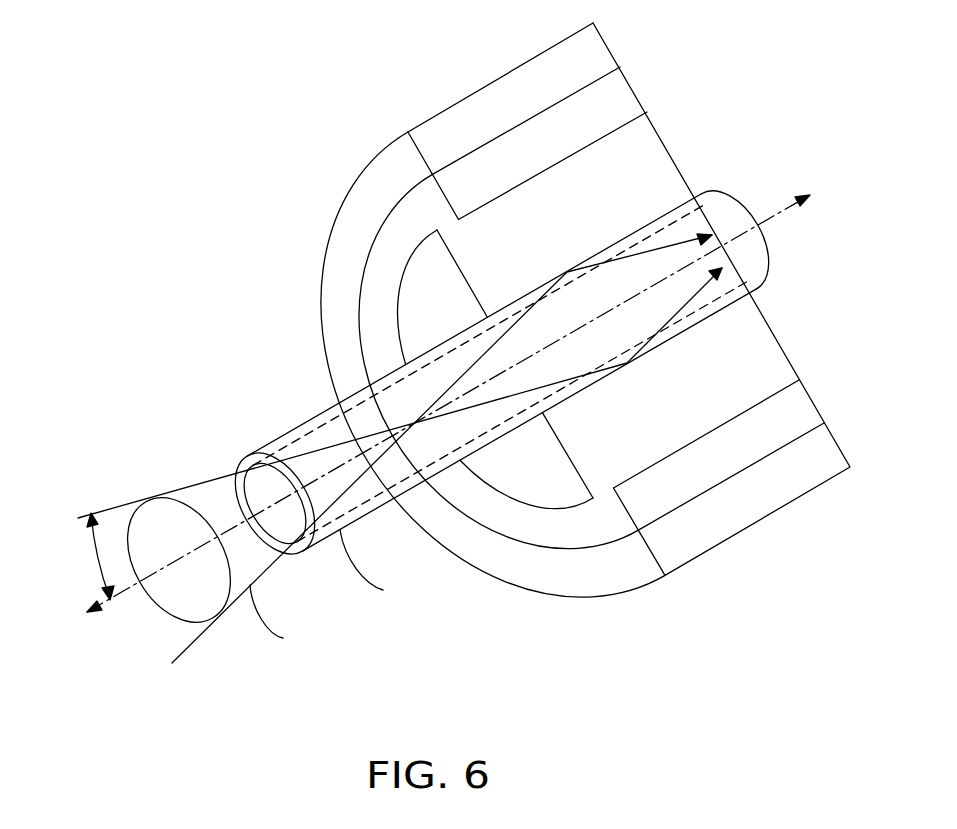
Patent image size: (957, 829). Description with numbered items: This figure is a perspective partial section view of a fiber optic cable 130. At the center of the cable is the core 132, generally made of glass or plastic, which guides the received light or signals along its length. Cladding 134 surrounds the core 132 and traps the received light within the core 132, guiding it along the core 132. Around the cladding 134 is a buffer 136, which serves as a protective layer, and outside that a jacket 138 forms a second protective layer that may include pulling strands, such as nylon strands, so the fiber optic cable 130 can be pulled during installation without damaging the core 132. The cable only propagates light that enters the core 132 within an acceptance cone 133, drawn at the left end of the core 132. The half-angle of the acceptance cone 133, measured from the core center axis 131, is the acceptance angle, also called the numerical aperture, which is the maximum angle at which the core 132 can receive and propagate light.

The fiber optic cable 130 is at (265, 207).
The core center axis 131 is at (426, 418).
The core 132 is at (287, 430).
The acceptance cone 133 is at (197, 475).
The cladding 134 is at (762, 340).
The buffer 136 is at (800, 408).
The jacket 138 is at (828, 453).